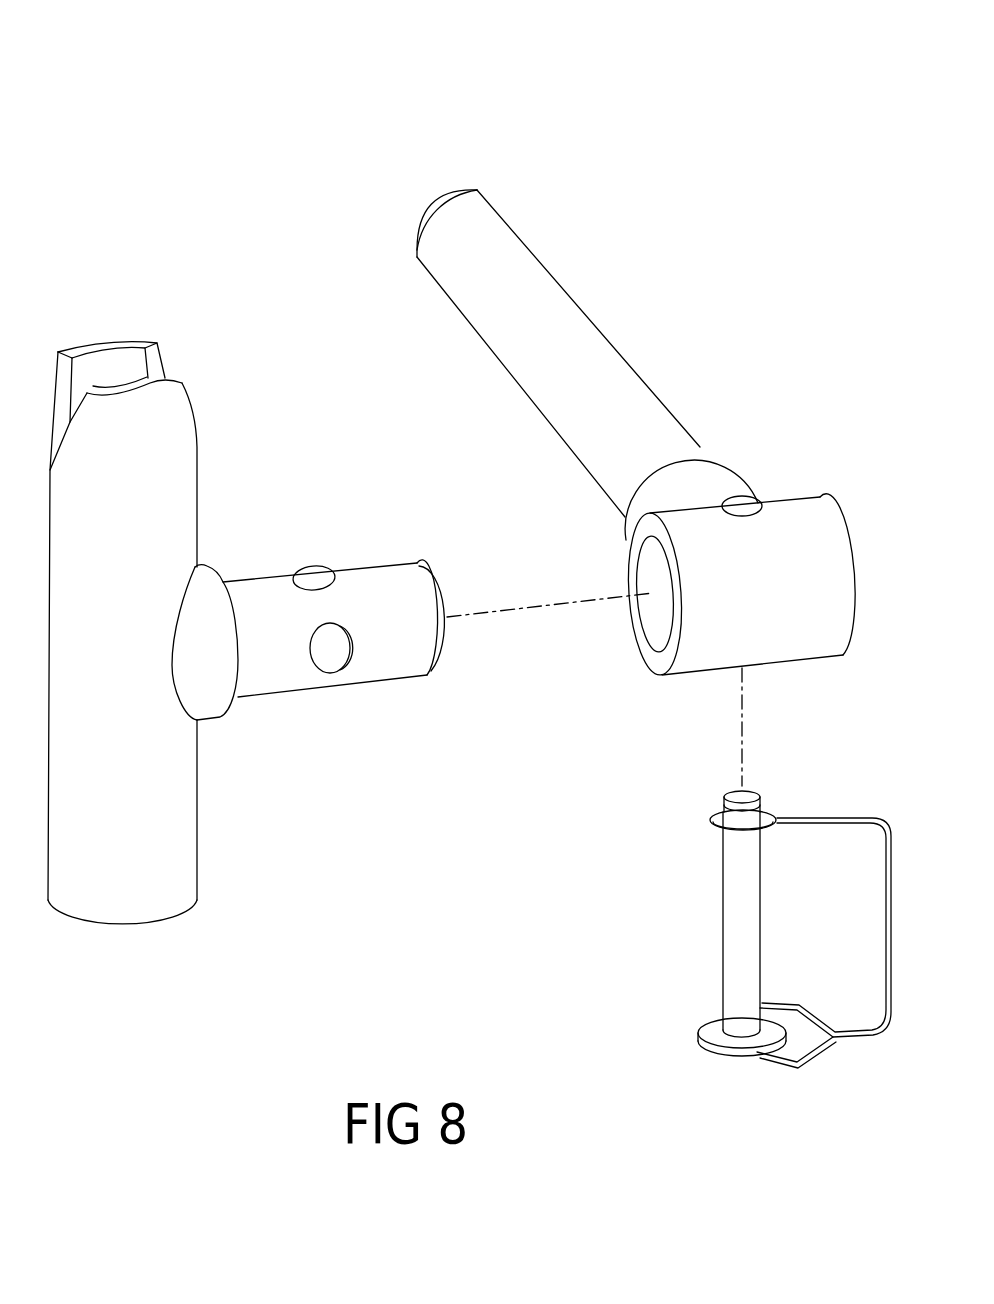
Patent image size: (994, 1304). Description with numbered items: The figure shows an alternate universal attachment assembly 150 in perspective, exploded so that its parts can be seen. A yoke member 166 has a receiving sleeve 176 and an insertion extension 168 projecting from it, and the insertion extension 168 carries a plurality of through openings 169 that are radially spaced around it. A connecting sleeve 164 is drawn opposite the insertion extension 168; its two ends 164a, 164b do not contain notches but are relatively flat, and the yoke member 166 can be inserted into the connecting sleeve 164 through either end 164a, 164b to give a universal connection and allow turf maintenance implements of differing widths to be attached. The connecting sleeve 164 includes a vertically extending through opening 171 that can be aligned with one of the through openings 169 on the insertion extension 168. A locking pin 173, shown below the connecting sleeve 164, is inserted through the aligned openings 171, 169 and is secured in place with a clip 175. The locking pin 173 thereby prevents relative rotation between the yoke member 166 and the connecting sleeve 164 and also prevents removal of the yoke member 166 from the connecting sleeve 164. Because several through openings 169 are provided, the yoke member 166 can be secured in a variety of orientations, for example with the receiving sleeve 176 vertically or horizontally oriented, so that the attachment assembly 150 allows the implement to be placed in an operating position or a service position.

The universal attachment assembly 150 is at (636, 112).
The yoke member 166 is at (222, 340).
The receiving sleeve 176 is at (173, 857).
The insertion extension 168 is at (276, 679).
The through openings 169 is at (311, 580).
The connecting sleeve 164 is at (780, 647).
The end of connecting sleeve 164a is at (848, 546).
The end of connecting sleeve 164b is at (657, 660).
The through opening 171 is at (742, 508).
The locking pin 173 is at (730, 903).
The clip 175 is at (890, 932).